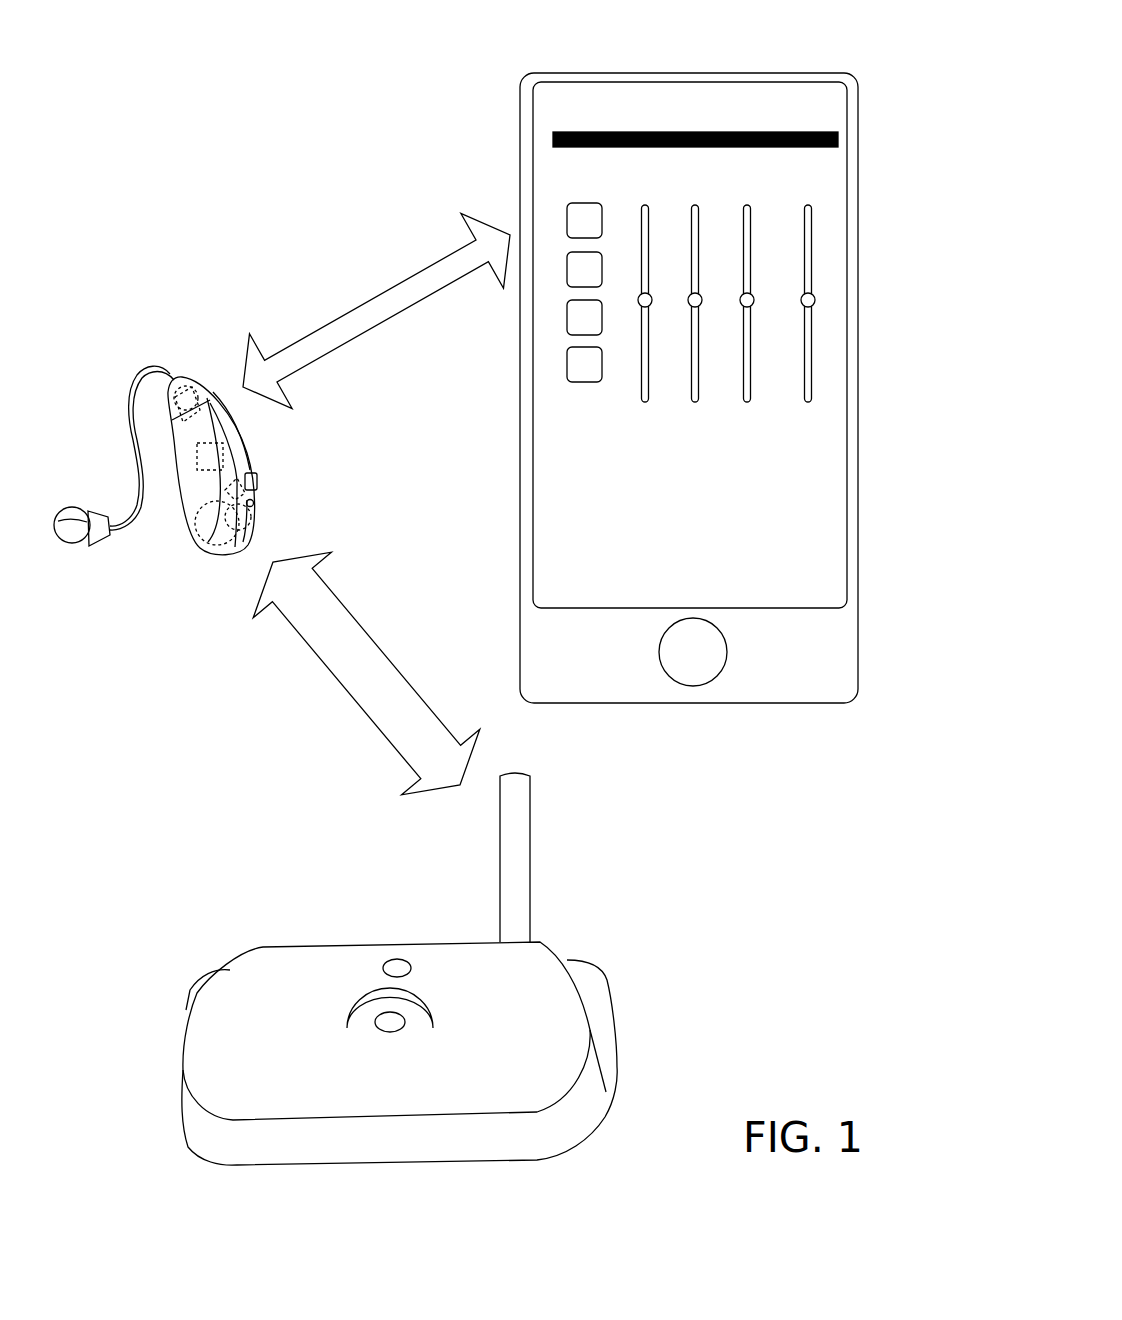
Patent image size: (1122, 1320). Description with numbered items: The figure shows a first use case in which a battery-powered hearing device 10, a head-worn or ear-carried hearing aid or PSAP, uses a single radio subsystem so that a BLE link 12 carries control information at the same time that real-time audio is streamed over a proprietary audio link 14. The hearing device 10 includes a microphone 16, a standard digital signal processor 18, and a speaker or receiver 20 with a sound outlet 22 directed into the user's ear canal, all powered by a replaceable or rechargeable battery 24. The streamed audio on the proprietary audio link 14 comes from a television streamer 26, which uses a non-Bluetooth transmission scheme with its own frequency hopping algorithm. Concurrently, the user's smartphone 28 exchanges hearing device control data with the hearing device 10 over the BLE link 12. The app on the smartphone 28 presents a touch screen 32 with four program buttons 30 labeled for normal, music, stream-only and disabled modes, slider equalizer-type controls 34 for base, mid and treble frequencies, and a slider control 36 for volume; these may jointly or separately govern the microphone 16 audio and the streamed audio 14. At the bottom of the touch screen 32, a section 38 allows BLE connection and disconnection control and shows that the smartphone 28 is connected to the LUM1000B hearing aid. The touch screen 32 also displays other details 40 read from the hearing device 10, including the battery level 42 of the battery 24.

The hearing device 10 is at (183, 452).
The BLE link 12 is at (330, 350).
The proprietary audio link 14 is at (375, 643).
The microphone 16 is at (243, 468).
The digital signal processor 18 is at (205, 472).
The speaker (receiver) 20 is at (183, 387).
The sound outlet 22 is at (62, 520).
The battery 24 is at (217, 545).
The television streamer 26 is at (317, 973).
The smartphone 28 is at (665, 388).
The buttons 30 is at (570, 262).
The touch screen 32 is at (837, 178).
The slider equalizer-type controls 34 is at (647, 242).
The slider control for Volume 36 is at (805, 242).
The section 38 is at (548, 572).
The other details 40 is at (535, 473).
The battery level 42 is at (583, 440).